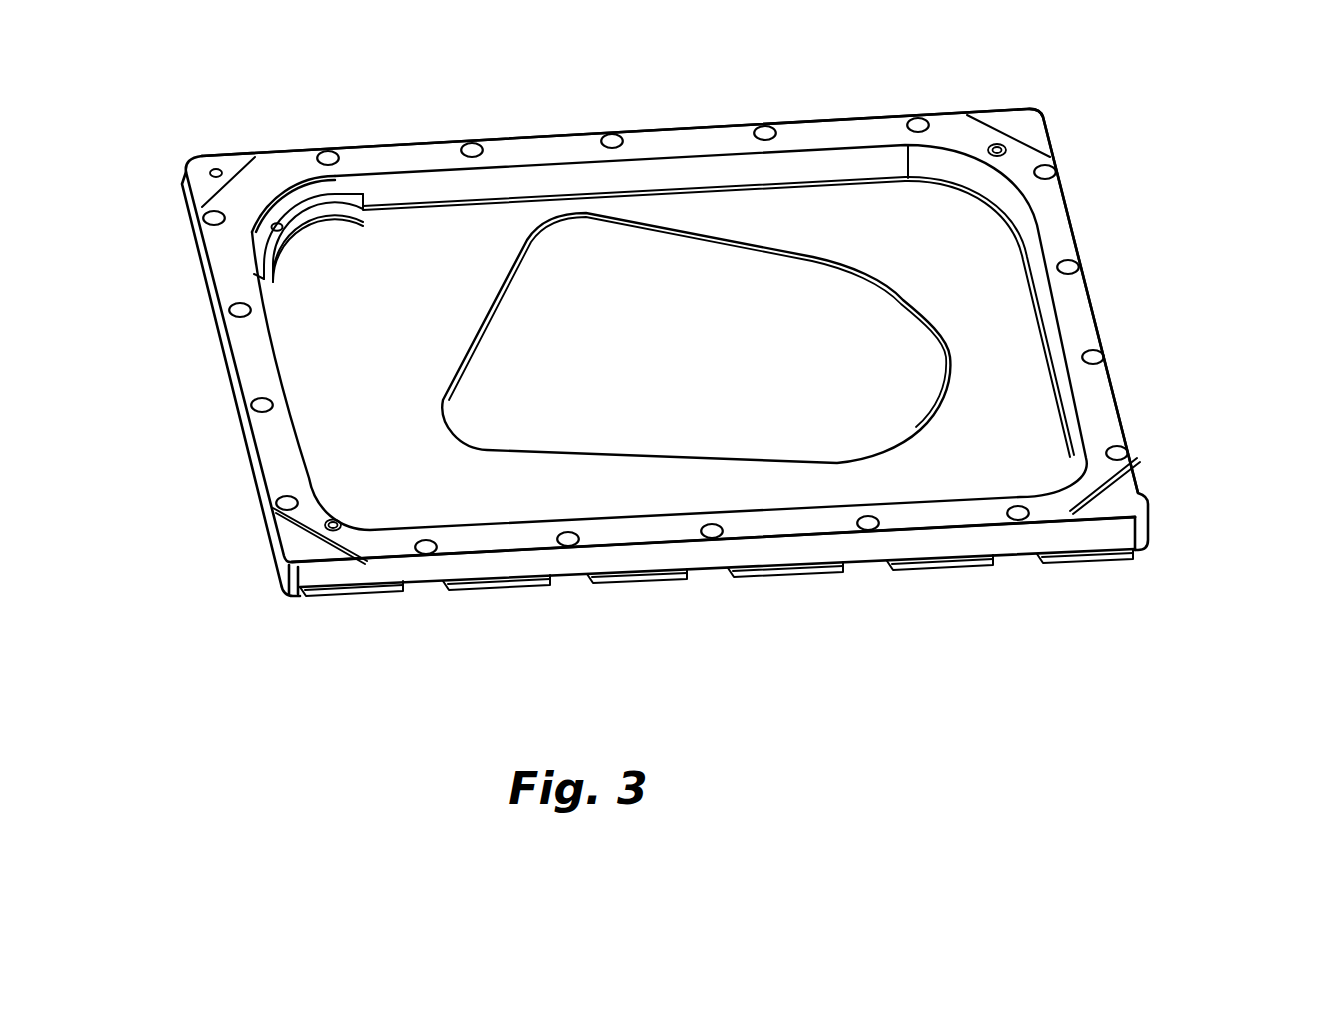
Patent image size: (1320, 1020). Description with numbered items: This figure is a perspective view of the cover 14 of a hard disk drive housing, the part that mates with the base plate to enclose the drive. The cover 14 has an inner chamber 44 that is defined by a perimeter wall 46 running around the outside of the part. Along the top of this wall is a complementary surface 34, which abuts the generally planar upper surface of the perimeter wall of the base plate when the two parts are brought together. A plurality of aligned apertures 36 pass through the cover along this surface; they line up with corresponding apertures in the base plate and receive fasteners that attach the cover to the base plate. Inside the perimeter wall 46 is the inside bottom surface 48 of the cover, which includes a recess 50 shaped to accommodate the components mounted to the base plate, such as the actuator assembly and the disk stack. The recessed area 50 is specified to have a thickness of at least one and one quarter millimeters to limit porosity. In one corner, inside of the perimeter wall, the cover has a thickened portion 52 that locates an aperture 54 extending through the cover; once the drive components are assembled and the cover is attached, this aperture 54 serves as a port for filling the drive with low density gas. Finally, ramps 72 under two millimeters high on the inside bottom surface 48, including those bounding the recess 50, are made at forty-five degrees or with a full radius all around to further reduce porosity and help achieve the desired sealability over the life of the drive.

The cover 14 is at (1130, 300).
The complementary surface 34 is at (858, 131).
The aligned apertures 36 is at (471, 146).
The inner chamber 44 is at (955, 225).
The perimeter wall 46 is at (597, 128).
The inside bottom surface 48 is at (350, 320).
The recess 50 is at (702, 365).
The thickened portion 52 is at (313, 210).
The aperture 54 is at (276, 224).
The ramps 72 is at (497, 304).